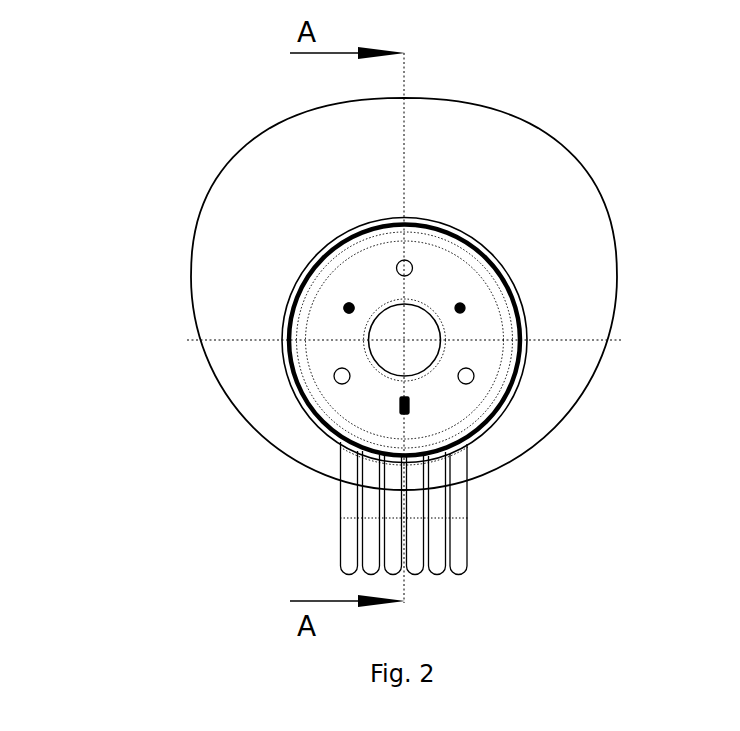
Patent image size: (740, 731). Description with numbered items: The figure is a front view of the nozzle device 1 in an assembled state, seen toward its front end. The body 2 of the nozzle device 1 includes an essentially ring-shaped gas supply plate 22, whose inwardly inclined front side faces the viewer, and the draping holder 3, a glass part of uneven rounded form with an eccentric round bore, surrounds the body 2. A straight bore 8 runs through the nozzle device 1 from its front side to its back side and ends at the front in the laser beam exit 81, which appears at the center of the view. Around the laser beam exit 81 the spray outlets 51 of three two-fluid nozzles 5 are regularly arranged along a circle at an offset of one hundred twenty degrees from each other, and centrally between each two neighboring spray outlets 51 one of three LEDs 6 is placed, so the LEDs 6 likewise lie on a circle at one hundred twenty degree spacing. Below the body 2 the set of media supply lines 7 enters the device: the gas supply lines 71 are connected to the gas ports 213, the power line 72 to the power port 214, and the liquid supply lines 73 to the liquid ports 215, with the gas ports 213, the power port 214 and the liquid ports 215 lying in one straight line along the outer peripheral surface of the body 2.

The nozzle device 1 is at (158, 138).
The body 2 is at (540, 295).
The draping holder 3 is at (488, 128).
The two-fluid nozzle 5 is at (328, 306).
The LED 6 is at (346, 304).
The media supply lines 7 is at (383, 516).
The bore 8 is at (399, 362).
The gas supply plate 22 is at (270, 340).
The spray outlet 51 is at (396, 264).
The gas supply line 71 is at (463, 559).
The power line 72 is at (420, 533).
The liquid supply line 73 is at (348, 533).
The laser beam exit 81 is at (418, 333).
The gas port 213 is at (492, 232).
The power port 214 is at (420, 472).
The liquid port 215 is at (352, 453).